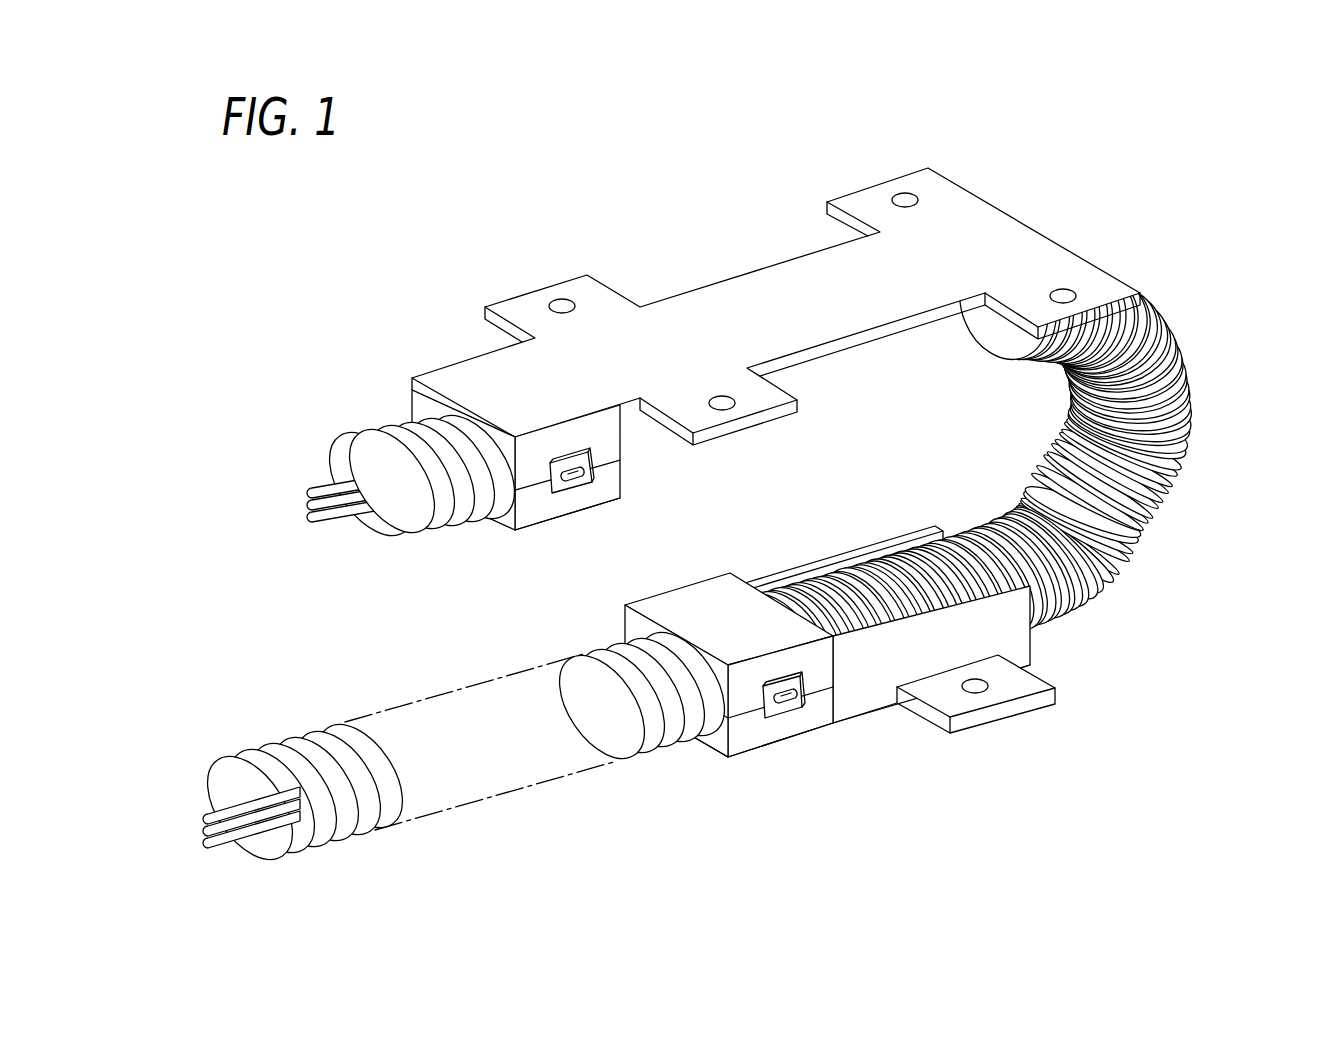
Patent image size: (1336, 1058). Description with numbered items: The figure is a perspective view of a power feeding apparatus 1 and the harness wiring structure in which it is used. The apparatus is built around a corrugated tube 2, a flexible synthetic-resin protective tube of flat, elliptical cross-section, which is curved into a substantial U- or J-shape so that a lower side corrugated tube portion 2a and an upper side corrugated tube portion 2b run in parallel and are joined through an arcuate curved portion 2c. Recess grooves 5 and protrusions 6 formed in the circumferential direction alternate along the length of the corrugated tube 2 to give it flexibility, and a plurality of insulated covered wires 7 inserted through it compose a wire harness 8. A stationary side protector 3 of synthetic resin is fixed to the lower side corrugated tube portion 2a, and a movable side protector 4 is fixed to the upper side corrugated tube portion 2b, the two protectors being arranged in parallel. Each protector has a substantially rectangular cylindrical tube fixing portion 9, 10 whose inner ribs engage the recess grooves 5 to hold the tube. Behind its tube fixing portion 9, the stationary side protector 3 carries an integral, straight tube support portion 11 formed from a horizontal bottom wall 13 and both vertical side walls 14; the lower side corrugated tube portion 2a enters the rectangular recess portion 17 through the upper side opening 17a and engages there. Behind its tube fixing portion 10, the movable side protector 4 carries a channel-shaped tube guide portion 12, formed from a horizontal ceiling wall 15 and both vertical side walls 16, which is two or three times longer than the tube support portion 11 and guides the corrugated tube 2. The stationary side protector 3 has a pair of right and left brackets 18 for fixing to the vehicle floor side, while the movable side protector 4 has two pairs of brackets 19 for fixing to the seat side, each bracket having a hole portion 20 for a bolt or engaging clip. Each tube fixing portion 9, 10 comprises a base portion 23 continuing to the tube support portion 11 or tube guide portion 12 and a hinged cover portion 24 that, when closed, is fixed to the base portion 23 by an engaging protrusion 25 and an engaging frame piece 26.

The power feeding apparatus 1 is at (648, 167).
The corrugated tube 2 is at (985, 478).
The lower side corrugated tube portion 2a is at (567, 775).
The upper side corrugated tube portion 2b is at (385, 418).
The arcuate curved portion 2c is at (1180, 452).
The stationary side protector 3 is at (871, 666).
The movable side protector 4 is at (776, 446).
The recess grooves 5 is at (1153, 507).
The protrusions 6 is at (1147, 517).
The insulated covered wires 7 is at (247, 840).
The wire harness 8 is at (202, 790).
The tube fixing portion 9 is at (695, 568).
The tube fixing portion 10 is at (531, 542).
The tube support portion 11 is at (829, 547).
The tube guide portion 12 is at (869, 406).
The horizontal bottom wall 13 is at (848, 725).
The vertical side walls 14 is at (873, 688).
The horizontal ceiling wall 15 is at (705, 325).
The vertical side walls 16 is at (917, 360).
The recess portion 17 is at (948, 478).
The upper side opening 17a is at (863, 557).
The brackets 18 is at (1058, 701).
The brackets 19 is at (874, 190).
The hole portion 20 is at (905, 194).
The base portion 23 is at (605, 440).
The cover portion 24 is at (603, 495).
The engaging protrusion 25 is at (790, 702).
The engaging frame piece 26 is at (775, 710).